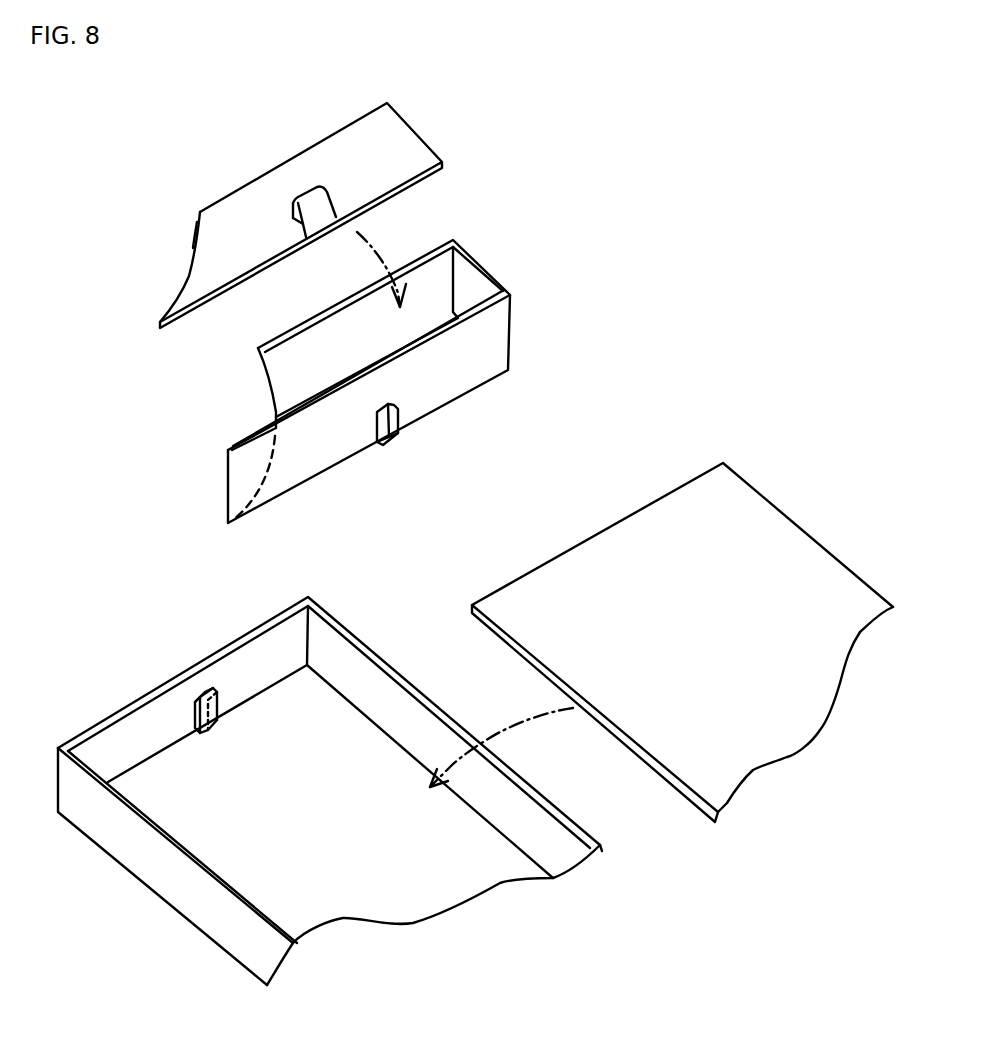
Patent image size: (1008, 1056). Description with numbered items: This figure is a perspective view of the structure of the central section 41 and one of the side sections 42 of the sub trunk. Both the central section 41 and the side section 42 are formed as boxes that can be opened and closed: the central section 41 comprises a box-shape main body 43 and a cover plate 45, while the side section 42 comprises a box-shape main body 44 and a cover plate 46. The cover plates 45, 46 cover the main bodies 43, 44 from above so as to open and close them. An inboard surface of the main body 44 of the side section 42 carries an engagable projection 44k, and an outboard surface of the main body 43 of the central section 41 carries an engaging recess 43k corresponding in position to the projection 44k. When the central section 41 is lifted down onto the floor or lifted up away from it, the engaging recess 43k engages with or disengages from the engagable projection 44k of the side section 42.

The central section 41 is at (495, 525).
The side section 42 is at (527, 88).
The box-shape main body 43 is at (355, 635).
The engaging recess 43k is at (190, 716).
The box-shape main body 44 is at (502, 286).
The engagable projection 44k is at (398, 413).
The cover plate 45 is at (567, 548).
The cover plate 46 is at (421, 136).